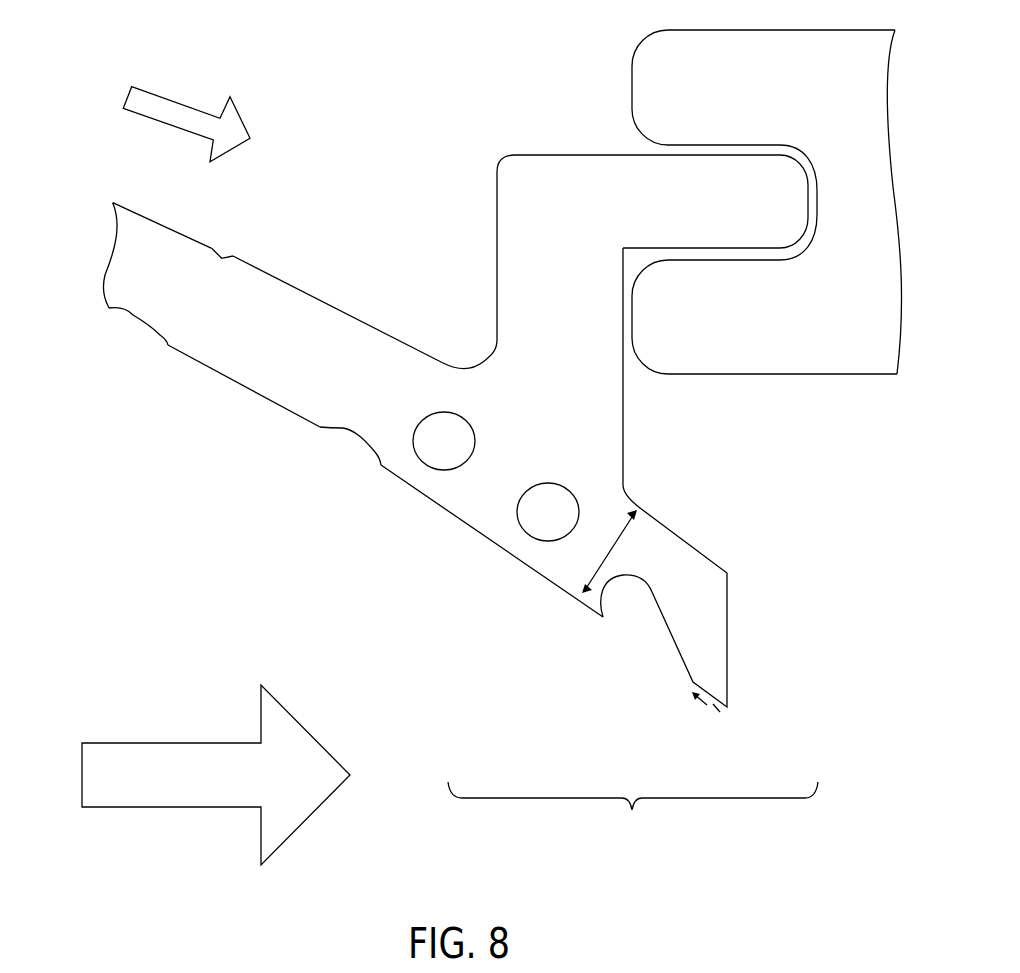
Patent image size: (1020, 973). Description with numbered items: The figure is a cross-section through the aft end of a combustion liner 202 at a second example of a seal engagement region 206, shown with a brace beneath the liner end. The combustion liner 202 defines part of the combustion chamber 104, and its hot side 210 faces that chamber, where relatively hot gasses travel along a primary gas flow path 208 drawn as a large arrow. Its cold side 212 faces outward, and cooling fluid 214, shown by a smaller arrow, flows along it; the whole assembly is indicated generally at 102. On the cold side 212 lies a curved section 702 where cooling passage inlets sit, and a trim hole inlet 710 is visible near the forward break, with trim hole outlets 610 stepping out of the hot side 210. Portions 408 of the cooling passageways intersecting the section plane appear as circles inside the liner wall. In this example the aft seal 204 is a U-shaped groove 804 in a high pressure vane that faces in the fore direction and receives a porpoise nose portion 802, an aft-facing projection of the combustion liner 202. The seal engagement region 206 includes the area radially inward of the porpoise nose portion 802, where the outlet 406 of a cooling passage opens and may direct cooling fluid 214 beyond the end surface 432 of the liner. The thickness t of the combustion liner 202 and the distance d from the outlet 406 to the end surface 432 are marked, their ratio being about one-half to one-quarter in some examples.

The vehicle assembly 102 is at (70, 535).
The combustion chamber 104 is at (290, 618).
The combustion liner 202 is at (132, 222).
The aft seal 204 is at (850, 372).
The seal engagement region 206 is at (633, 811).
The primary gas flow path 208 is at (197, 743).
The hot side 210 is at (200, 368).
The cold side 212 is at (185, 235).
The cooling fluid 214 is at (182, 102).
The outlets 406 is at (603, 620).
The portions of the cooling passageways 408 is at (447, 465).
The end surface 432 is at (727, 573).
The trim hole outlets 610 is at (150, 318).
The curved section 702 is at (472, 350).
The trim hole inlets 710 is at (222, 259).
The porpoise nose portion 802 is at (686, 217).
The U-shaped groove 804 is at (808, 166).
The thickness t is at (607, 557).
The distance d is at (703, 704).